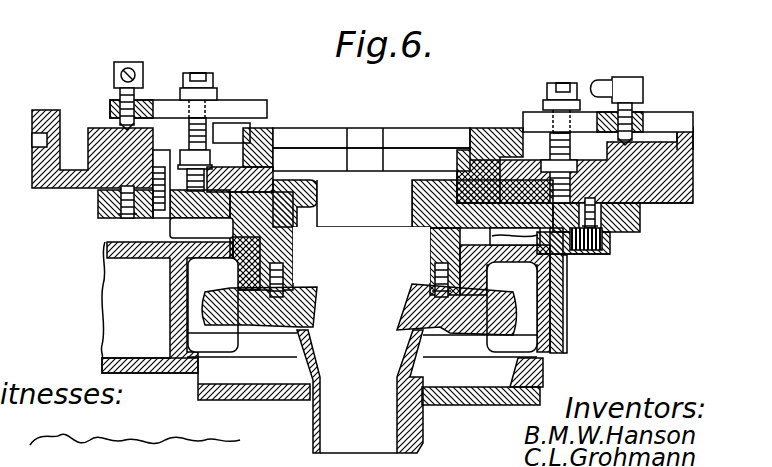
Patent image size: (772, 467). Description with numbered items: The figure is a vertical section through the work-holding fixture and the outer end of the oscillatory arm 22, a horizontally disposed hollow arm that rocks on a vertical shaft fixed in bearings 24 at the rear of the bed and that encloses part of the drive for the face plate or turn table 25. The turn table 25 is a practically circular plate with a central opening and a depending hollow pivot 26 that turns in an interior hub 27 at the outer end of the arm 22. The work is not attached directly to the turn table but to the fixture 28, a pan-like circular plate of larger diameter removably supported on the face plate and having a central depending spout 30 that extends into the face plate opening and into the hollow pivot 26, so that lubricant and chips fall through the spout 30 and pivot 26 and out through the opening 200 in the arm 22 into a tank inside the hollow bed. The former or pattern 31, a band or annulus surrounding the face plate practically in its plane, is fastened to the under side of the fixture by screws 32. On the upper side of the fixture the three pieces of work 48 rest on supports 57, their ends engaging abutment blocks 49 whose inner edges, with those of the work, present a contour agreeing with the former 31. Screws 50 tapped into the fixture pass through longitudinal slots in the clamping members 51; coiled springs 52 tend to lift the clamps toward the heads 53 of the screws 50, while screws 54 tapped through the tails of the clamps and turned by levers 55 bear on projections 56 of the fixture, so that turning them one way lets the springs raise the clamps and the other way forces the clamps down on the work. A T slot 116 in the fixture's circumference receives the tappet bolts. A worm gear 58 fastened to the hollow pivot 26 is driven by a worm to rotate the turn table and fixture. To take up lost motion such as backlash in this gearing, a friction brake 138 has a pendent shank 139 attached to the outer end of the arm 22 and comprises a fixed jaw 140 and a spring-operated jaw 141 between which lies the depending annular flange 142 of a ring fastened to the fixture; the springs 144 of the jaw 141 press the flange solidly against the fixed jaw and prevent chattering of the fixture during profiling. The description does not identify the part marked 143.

The oscillatory arm 22 is at (102, 364).
The bearings 24 is at (255, 125).
The face plate or turn table 25 is at (293, 142).
The hollow pivot 26 is at (298, 232).
The interior hub 27 is at (242, 285).
The fixture 28 is at (693, 195).
The depending spout 30 is at (320, 218).
The former 31 is at (636, 222).
The screws 32 is at (98, 202).
The pieces of work 48 is at (330, 142).
The blocks or abutments 49 is at (355, 152).
The screws 50 is at (190, 85).
The clamping members 51 is at (225, 105).
The springs 52 is at (185, 150).
The heads 53 is at (198, 74).
The screws 54 is at (120, 100).
The levers 55 is at (120, 74).
The projections 56 is at (95, 140).
The supports 57 is at (290, 168).
The worm gear 58 is at (205, 305).
The T slot 116 is at (693, 149).
The friction brake 138 is at (565, 257).
The pendent shank or web 139 is at (567, 340).
The fixed jaw 140 is at (565, 289).
The spring-operated jaw 141 is at (585, 256).
The depending annular flange 142 is at (440, 248).
The plate section 143 is at (458, 160).
The springs 144 is at (605, 248).
The opening 200 is at (360, 391).